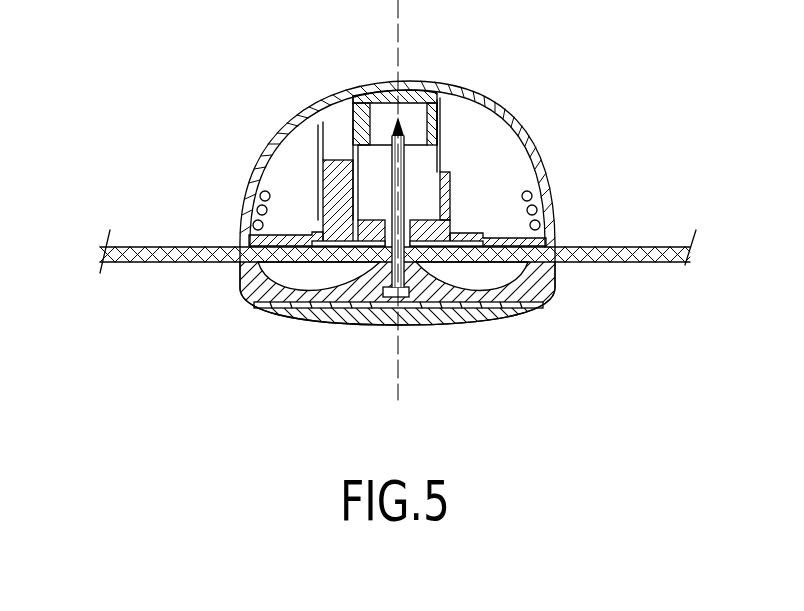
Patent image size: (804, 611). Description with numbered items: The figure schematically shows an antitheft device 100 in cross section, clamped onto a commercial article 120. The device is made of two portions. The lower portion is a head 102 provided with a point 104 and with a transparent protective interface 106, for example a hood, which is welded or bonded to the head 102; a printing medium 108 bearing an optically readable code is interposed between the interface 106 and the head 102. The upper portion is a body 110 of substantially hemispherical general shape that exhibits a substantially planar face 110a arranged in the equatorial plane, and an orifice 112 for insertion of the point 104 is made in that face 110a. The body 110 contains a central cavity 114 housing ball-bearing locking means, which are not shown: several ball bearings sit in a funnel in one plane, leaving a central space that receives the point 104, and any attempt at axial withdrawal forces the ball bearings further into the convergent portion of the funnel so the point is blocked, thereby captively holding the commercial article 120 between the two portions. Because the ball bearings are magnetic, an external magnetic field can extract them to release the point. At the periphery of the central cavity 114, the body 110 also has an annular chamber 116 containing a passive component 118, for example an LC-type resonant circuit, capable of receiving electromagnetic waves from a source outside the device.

The antitheft device 100 is at (339, 330).
The head 102 is at (556, 271).
The point 104 is at (390, 172).
The transparent protective interface 106 is at (420, 313).
The printing medium 108 is at (499, 309).
The body 110 is at (299, 112).
The substantially planar face 110a is at (240, 284).
The orifice 112 is at (403, 240).
The cavity 114 is at (382, 112).
The annular chamber 116 is at (284, 178).
The component 118 is at (248, 207).
The commercial article 120 is at (132, 247).